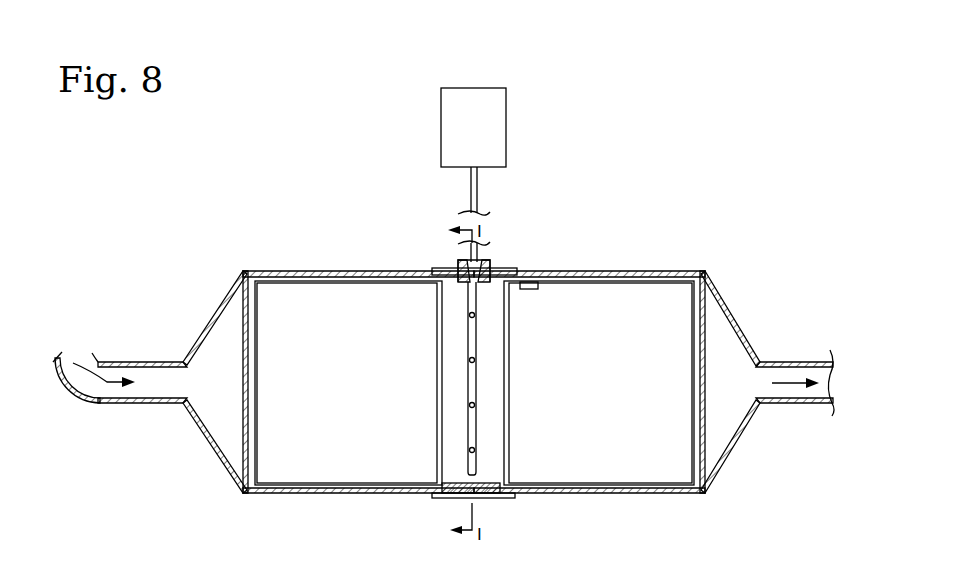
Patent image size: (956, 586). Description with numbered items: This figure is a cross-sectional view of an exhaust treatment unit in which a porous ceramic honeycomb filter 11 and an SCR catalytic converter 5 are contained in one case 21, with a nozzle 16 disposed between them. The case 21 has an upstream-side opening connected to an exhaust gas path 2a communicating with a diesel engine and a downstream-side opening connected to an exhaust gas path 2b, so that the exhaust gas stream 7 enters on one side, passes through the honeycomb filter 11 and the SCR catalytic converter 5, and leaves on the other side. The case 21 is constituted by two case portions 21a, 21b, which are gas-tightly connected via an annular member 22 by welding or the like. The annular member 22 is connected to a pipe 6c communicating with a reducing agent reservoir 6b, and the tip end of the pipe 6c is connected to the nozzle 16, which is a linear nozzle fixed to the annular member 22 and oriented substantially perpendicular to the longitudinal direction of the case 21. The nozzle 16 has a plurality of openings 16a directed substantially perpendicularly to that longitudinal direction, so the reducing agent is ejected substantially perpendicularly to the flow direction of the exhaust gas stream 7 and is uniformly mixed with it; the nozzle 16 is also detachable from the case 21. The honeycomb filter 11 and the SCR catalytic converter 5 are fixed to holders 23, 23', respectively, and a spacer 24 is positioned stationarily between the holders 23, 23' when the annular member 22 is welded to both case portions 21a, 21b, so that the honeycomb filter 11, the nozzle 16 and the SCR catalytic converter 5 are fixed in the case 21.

The exhaust gas path 2a is at (140, 362).
The exhaust gas path 2b is at (795, 363).
The SCR catalytic converter 5 is at (598, 298).
The reducing agent reservoir 6b is at (452, 122).
The pipe 6c is at (472, 195).
The exhaust gas stream 7 is at (107, 387).
The honeycomb filter 11 is at (365, 297).
The nozzle 16 is at (512, 378).
The openings 16a is at (473, 404).
The case 21 is at (474, 356).
The case portion 21a is at (300, 272).
The case portion 21b is at (648, 272).
The annular member 22 is at (505, 270).
The holder 23 is at (348, 404).
The holder 23' is at (599, 404).
The spacer 24 is at (452, 497).